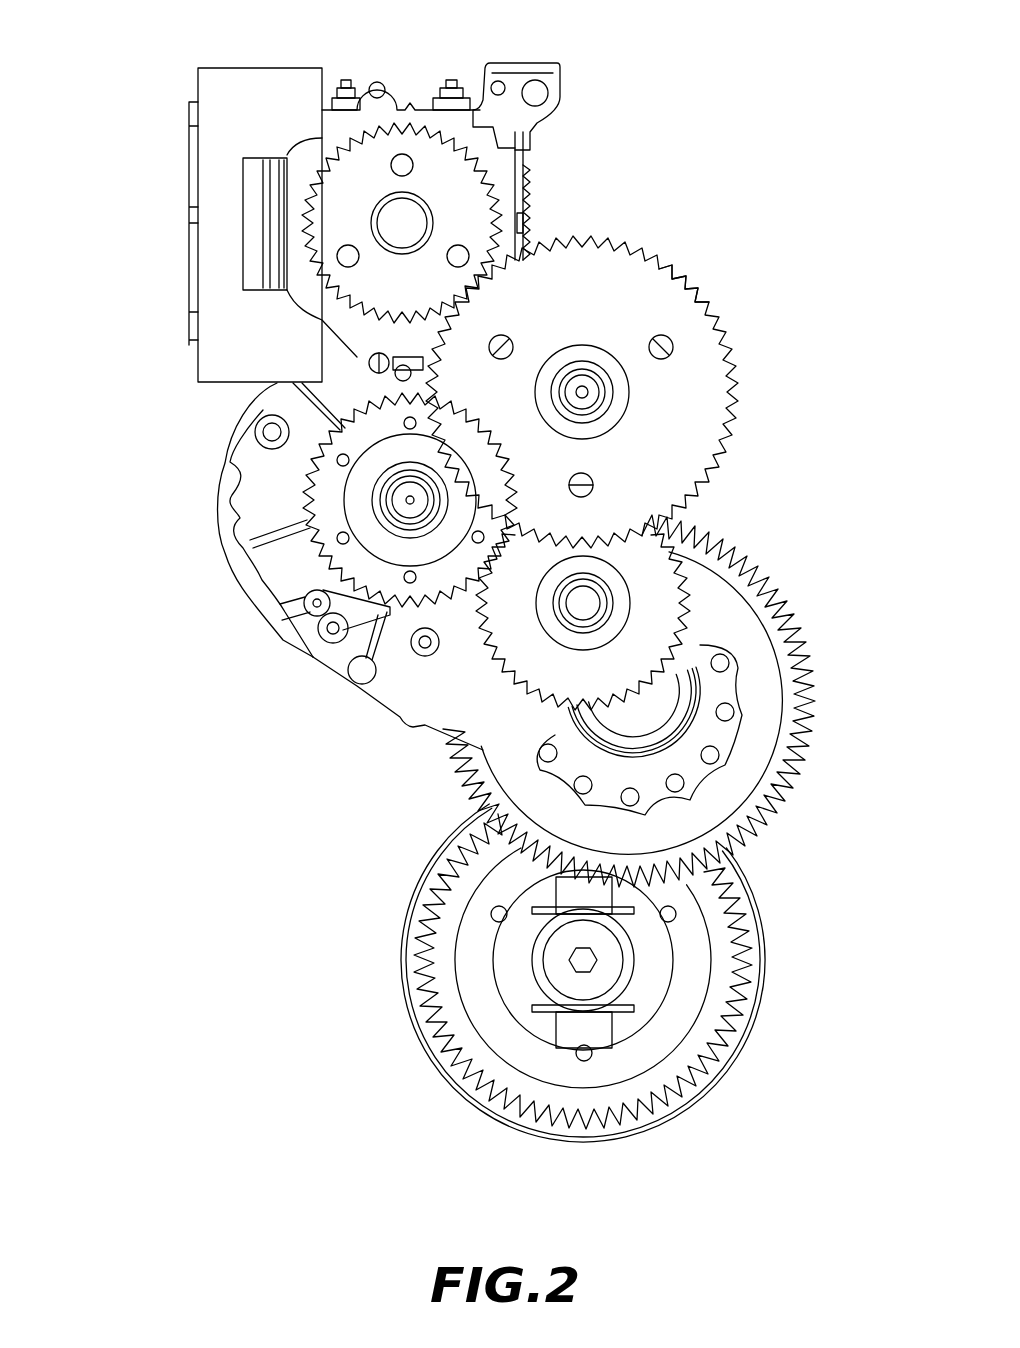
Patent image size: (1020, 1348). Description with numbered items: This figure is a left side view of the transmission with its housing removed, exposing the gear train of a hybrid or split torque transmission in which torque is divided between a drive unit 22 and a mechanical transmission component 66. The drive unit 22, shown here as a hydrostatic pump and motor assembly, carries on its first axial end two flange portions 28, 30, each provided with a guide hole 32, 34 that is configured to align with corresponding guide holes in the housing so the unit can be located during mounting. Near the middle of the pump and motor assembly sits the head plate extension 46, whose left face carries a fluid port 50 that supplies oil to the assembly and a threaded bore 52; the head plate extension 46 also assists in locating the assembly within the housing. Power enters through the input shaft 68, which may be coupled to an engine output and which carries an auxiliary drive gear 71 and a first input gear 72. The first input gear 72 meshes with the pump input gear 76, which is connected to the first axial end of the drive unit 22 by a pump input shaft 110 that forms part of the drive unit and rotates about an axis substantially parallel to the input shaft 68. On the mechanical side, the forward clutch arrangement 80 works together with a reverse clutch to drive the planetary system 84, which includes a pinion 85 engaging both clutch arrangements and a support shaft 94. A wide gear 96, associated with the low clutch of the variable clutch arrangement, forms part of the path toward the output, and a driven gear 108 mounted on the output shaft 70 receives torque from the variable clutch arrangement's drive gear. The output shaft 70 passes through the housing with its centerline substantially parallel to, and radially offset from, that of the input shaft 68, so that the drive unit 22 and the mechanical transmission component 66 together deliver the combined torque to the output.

The drive unit 22 is at (158, 235).
The flange portion 28 is at (388, 75).
The flange portion 30 is at (368, 376).
The guide hole 32 is at (360, 77).
The guide hole 34 is at (372, 362).
The head plate extension 46 is at (560, 88).
The fluid port 50 is at (556, 70).
The threaded bore 52 is at (483, 108).
The mechanical transmission component 66 is at (805, 515).
The input shaft 68 is at (583, 392).
The output shaft 70 is at (610, 978).
The auxiliary drive gear 71 is at (667, 300).
The first input gear 72 is at (647, 292).
The pump input gear 76 is at (500, 187).
The forward clutch arrangement 80 is at (462, 667).
The planetary system 84 is at (172, 525).
The pinion 85 is at (311, 658).
The support shaft 94 is at (407, 500).
The wide gear 96 is at (805, 653).
The driven gear 108 is at (741, 986).
The pump input shaft 110 is at (507, 233).